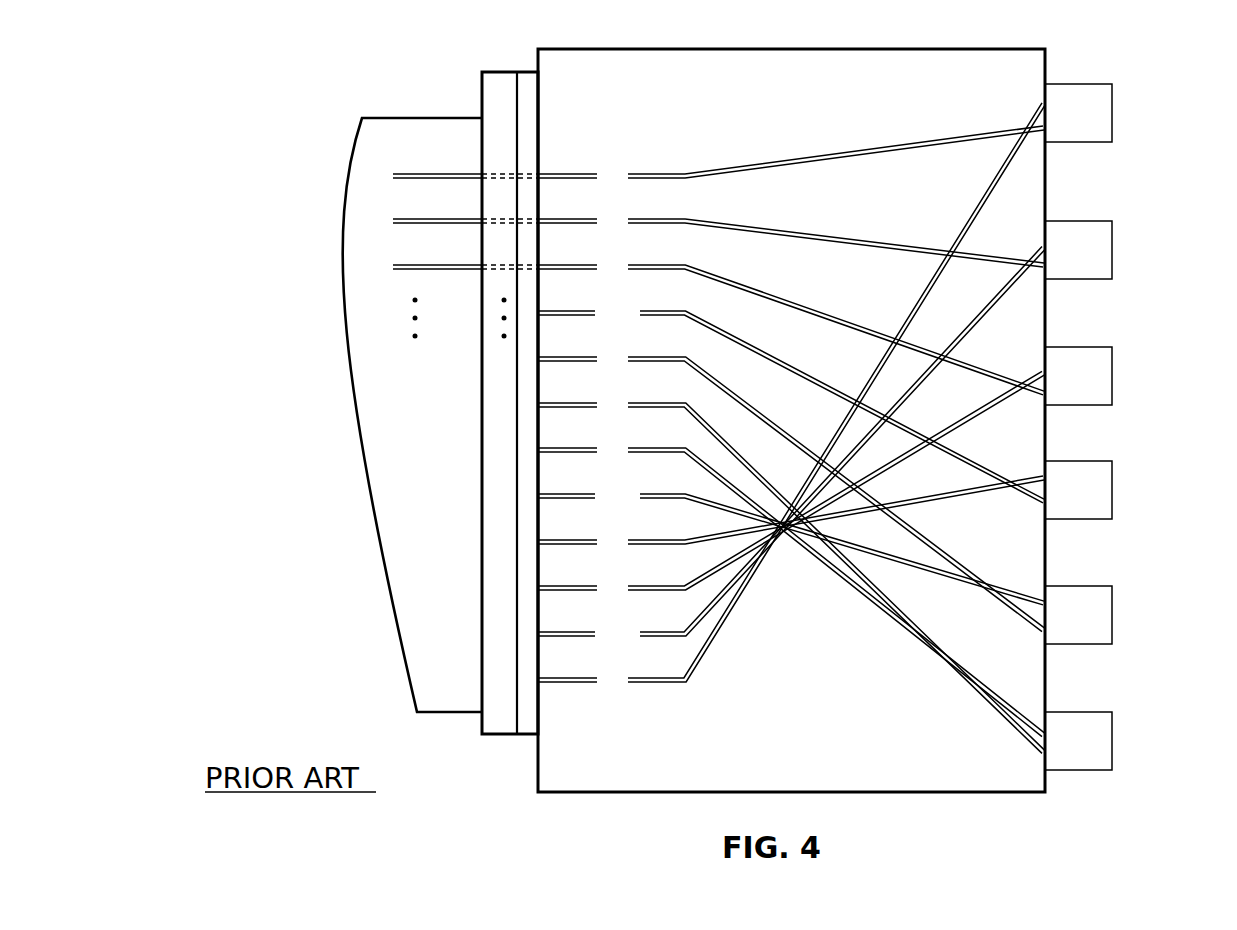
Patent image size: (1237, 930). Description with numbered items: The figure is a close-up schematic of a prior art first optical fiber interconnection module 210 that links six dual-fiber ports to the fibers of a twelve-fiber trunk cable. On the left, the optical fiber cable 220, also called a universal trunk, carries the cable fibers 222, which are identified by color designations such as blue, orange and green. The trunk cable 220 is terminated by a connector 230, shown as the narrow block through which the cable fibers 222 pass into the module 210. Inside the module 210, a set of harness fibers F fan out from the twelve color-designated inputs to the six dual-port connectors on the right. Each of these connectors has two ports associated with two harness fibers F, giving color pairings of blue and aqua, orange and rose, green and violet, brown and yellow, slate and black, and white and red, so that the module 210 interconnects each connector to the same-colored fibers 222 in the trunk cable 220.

The first optical fiber interconnection module 210 is at (606, 50).
The optical fiber cable 220 is at (415, 118).
The cable fibers 222 is at (414, 163).
The connector 230 is at (505, 72).
The harness fibers F is at (716, 132).